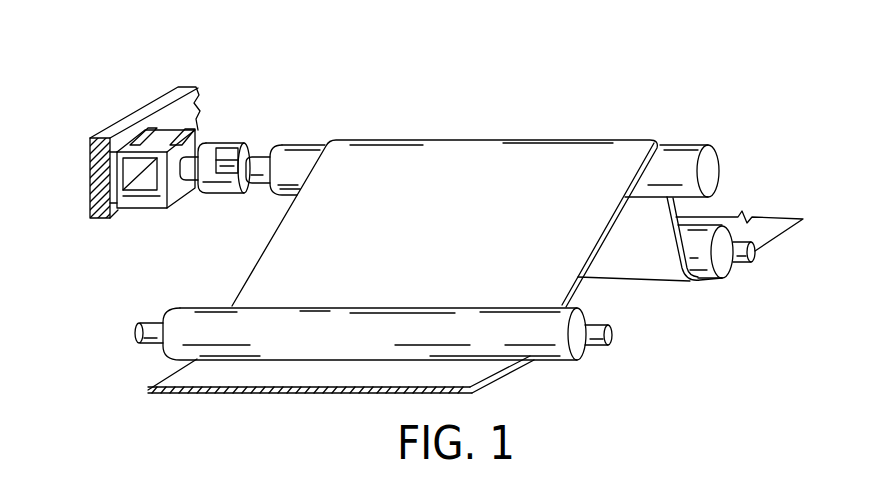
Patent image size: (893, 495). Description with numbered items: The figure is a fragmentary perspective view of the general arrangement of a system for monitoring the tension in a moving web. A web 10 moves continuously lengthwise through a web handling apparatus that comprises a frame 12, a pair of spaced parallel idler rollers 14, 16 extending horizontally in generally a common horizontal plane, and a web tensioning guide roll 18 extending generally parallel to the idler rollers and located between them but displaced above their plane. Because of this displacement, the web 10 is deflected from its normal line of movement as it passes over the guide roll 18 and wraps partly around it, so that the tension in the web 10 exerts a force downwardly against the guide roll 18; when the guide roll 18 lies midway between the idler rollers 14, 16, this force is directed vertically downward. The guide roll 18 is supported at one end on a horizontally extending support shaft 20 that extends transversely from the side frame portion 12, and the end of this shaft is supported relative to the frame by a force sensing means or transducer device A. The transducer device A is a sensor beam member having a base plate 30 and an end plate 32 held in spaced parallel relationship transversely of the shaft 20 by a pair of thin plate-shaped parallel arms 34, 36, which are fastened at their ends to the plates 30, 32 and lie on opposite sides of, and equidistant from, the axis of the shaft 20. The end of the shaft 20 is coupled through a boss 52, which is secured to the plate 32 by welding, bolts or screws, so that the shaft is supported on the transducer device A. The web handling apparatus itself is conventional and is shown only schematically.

The web 10 is at (273, 260).
The frame 12 is at (90, 208).
The idler roller 14 is at (703, 272).
The idler roller 16 is at (562, 362).
The web tensioning guide roll 18 is at (677, 157).
The support shaft 20 is at (258, 160).
The base plate 30 is at (117, 173).
The end plate 32 is at (162, 209).
The arm 34 is at (138, 158).
The arm 36 is at (148, 200).
The boss 52 is at (210, 147).
The force sensing transducer device A is at (153, 85).